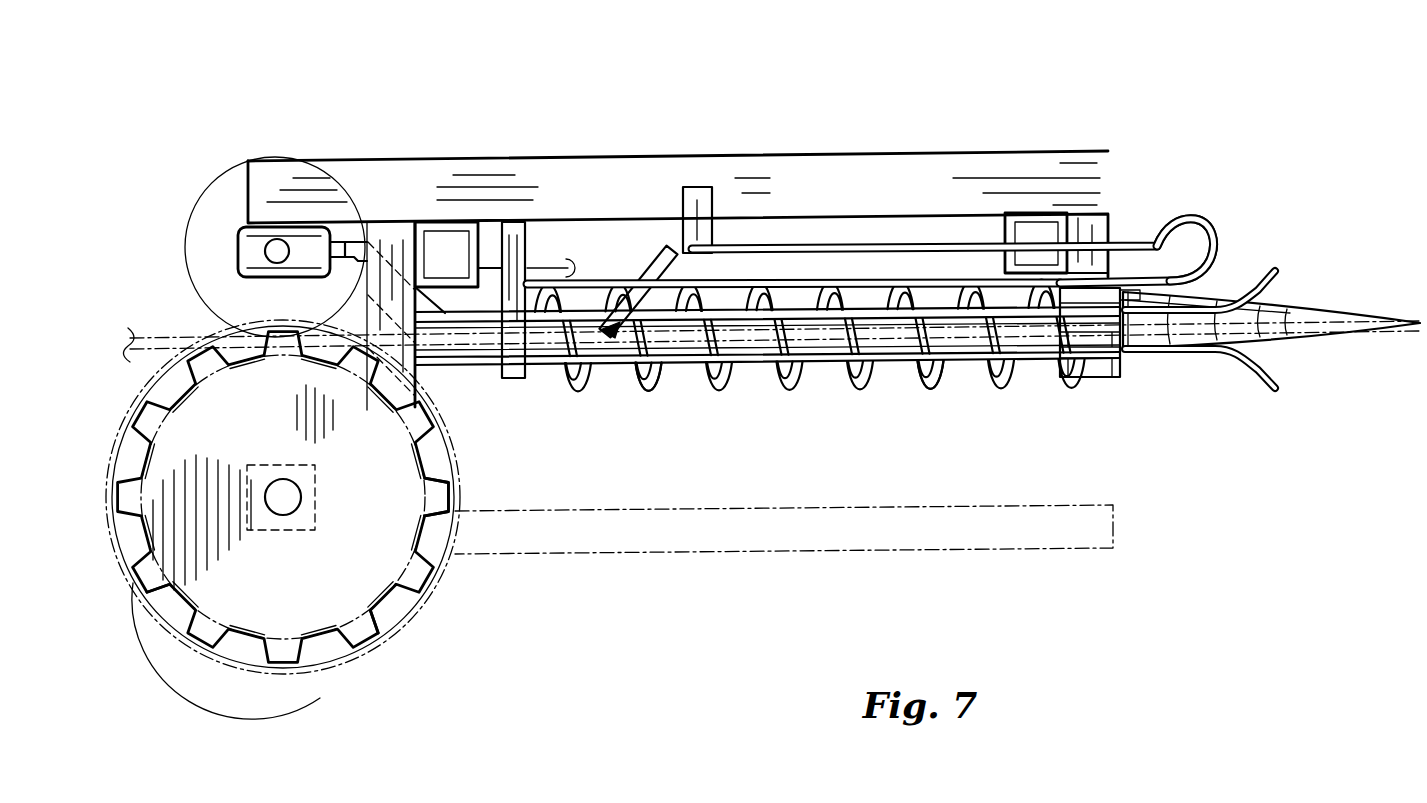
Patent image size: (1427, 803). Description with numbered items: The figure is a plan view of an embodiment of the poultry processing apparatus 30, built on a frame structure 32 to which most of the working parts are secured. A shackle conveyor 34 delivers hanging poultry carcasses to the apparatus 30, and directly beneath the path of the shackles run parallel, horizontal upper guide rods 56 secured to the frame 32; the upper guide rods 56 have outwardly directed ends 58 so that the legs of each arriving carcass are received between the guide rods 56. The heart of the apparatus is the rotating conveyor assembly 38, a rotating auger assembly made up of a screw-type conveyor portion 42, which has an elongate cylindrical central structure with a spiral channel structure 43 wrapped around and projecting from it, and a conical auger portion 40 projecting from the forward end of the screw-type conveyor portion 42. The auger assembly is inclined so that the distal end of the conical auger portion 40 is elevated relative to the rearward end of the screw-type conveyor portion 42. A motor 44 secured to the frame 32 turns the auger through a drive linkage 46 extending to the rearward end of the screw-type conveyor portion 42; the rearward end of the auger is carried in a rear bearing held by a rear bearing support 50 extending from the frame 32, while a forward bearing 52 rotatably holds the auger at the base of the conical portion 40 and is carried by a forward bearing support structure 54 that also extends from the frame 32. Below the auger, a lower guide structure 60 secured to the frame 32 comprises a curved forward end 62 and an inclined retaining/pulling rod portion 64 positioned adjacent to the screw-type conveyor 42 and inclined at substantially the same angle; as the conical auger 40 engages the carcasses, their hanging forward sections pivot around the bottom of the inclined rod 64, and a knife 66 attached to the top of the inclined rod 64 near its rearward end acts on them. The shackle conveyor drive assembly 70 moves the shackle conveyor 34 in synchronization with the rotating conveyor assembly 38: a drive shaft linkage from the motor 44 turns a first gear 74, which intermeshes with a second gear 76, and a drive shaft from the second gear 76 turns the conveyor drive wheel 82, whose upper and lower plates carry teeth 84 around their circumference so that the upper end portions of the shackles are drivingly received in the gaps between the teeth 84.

The poultry processing apparatus 30 is at (833, 135).
The frame structure 32 is at (430, 172).
The shackle conveyor 34 is at (167, 338).
The rotating conveyor assembly 38 is at (953, 347).
The conical auger portion 40 is at (1286, 311).
The screw-type conveyor portion 42 is at (750, 343).
The spiral channel structure 43 is at (648, 385).
The motor 44 is at (247, 243).
The drive linkage 46 is at (345, 245).
The rear bearing support 50 is at (513, 246).
The forward bearing 52 is at (1093, 380).
The forward bearing support structure 54 is at (1087, 225).
The upper guide rods 56 is at (817, 347).
The outwardly directed ends 58 is at (1261, 272).
The lower guide structure 60 is at (886, 242).
The curved forward end 62 is at (1191, 220).
The inclined retaining/pulling rod portion 64 is at (800, 278).
The knife 66 is at (655, 268).
The shackle conveyor drive assembly 70 is at (345, 597).
The first gear 74 is at (232, 170).
The second gear 76 is at (455, 455).
The conveyor drive wheel 82 is at (407, 498).
The teeth 84 is at (200, 637).